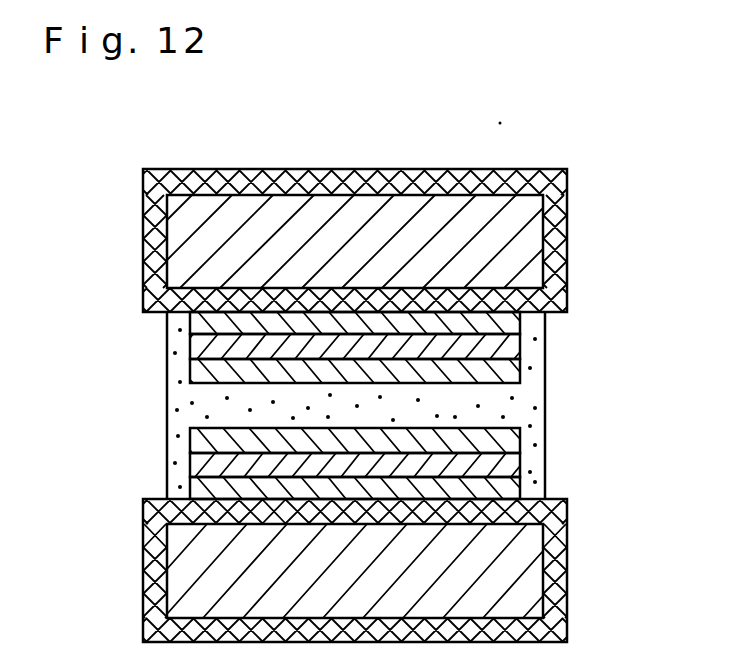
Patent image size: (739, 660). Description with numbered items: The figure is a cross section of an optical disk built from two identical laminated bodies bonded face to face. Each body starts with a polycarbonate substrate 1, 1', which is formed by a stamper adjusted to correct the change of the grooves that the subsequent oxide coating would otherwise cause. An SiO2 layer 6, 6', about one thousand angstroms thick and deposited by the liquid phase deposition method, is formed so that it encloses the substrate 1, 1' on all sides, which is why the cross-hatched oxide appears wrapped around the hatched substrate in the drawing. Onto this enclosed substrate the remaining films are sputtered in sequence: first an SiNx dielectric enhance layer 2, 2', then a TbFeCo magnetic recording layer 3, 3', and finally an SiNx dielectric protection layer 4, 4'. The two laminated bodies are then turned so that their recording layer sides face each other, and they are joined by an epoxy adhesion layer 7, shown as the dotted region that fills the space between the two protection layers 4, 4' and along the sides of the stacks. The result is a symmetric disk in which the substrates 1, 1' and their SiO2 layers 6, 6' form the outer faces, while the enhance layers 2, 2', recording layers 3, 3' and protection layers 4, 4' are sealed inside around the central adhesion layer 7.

The polycarbonate substrate 1 is at (389, 241).
The polycarbonate substrate 1' is at (395, 571).
The SiNx dielectric enhance layer 2 is at (401, 326).
The SiNx dielectric enhance layer 2' is at (407, 492).
The TbFeCo magnetic recording layer 3 is at (401, 354).
The TbFeCo magnetic recording layer 3' is at (407, 461).
The SiNx dielectric protection layer 4 is at (401, 382).
The SiNx dielectric protection layer 4' is at (407, 433).
The SiO2 layer 6 is at (385, 240).
The SiO2 layer 6' is at (395, 570).
The adhesion layer 7 is at (183, 402).